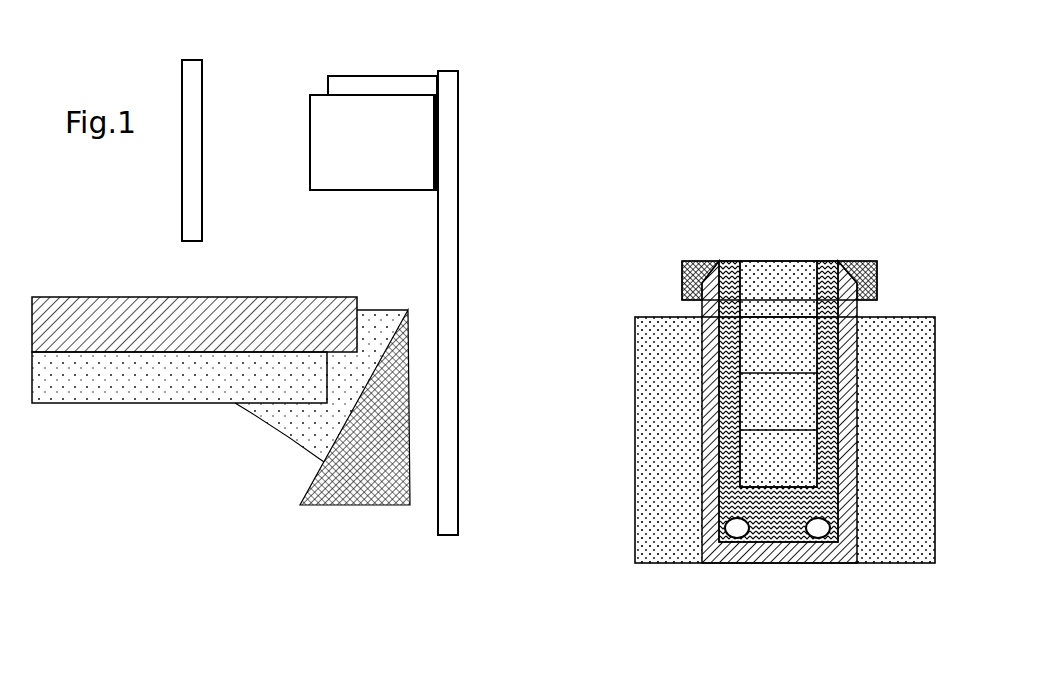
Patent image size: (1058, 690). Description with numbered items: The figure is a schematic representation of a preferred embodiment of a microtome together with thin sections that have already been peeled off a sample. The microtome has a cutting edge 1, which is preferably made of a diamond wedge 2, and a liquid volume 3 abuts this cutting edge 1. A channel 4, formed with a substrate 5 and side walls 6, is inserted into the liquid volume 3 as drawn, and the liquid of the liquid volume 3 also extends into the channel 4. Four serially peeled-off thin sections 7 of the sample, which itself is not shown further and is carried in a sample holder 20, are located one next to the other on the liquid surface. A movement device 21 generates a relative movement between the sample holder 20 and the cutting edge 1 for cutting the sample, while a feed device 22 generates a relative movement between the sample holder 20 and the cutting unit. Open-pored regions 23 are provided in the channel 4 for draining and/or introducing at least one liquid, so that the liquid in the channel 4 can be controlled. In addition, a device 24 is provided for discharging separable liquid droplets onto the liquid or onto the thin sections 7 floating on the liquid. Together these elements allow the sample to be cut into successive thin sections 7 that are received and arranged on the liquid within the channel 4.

The cutting edge 1 is at (730, 261).
The diamond wedge 2 is at (682, 282).
The liquid volume 3 is at (297, 432).
The channel 4 is at (715, 515).
The substrate 5 is at (143, 382).
The side walls 6 is at (155, 317).
The thin sections 7 is at (373, 317).
The sample holder 20 is at (325, 125).
The movement device 21 is at (393, 83).
The feed device 22 is at (449, 122).
The open-pored regions 23 is at (743, 535).
The device for discharging separable liquid droplets 24 is at (195, 219).